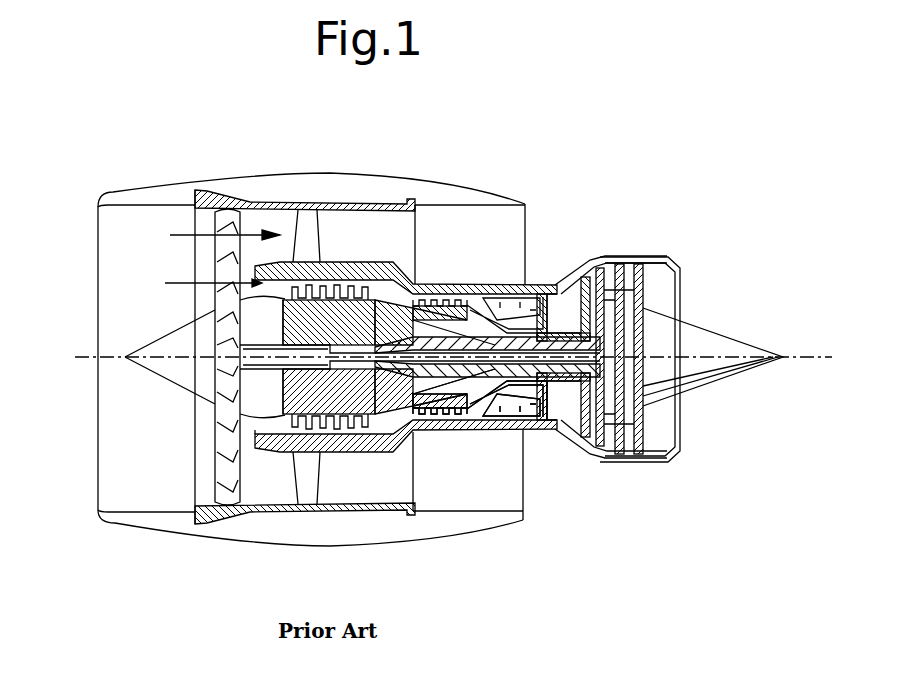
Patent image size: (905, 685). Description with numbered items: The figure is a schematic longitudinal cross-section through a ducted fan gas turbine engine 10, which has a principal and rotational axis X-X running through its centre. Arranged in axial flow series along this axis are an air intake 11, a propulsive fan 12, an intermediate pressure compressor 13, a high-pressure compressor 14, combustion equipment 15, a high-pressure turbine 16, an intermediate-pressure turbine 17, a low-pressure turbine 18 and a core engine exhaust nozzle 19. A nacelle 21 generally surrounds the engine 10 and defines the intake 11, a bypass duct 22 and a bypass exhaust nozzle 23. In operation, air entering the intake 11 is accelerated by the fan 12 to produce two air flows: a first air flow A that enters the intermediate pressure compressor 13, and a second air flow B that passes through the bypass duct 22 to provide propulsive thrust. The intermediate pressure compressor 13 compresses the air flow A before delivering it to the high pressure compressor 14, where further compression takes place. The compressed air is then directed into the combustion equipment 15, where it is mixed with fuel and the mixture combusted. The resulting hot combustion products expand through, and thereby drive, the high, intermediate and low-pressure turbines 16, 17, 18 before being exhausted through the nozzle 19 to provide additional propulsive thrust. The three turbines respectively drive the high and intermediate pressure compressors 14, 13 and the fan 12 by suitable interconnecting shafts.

The ducted fan gas turbine engine 10 is at (160, 148).
The air intake 11 is at (150, 205).
The propulsive fan 12 is at (213, 463).
The intermediate pressure compressor 13 is at (342, 440).
The high-pressure compressor 14 is at (443, 293).
The combustion equipment 15 is at (482, 432).
The high-pressure turbine 16 is at (537, 442).
The intermediate-pressure turbine 17 is at (573, 278).
The low-pressure turbine 18 is at (597, 457).
The core engine exhaust nozzle 19 is at (678, 254).
The nacelle 21 is at (317, 173).
The bypass duct 22 is at (497, 240).
The bypass exhaust nozzle 23 is at (523, 203).
The first air flow A is at (205, 282).
The second air flow B is at (216, 236).
The principal and rotational axis X is at (449, 360).